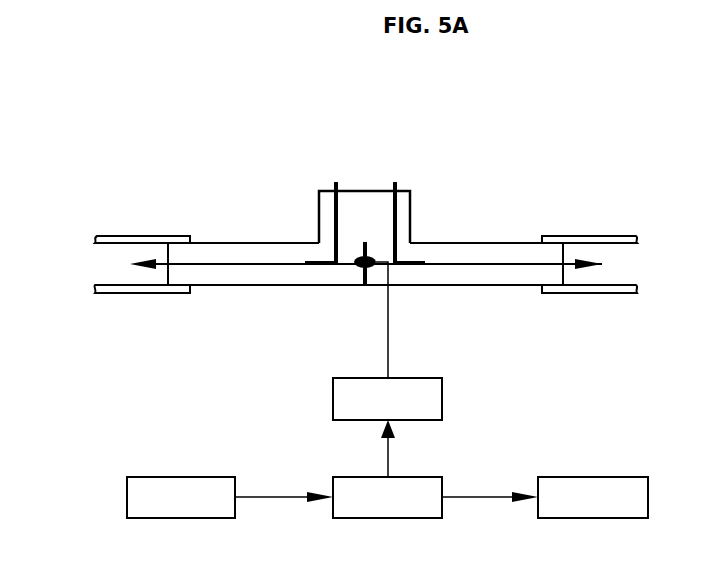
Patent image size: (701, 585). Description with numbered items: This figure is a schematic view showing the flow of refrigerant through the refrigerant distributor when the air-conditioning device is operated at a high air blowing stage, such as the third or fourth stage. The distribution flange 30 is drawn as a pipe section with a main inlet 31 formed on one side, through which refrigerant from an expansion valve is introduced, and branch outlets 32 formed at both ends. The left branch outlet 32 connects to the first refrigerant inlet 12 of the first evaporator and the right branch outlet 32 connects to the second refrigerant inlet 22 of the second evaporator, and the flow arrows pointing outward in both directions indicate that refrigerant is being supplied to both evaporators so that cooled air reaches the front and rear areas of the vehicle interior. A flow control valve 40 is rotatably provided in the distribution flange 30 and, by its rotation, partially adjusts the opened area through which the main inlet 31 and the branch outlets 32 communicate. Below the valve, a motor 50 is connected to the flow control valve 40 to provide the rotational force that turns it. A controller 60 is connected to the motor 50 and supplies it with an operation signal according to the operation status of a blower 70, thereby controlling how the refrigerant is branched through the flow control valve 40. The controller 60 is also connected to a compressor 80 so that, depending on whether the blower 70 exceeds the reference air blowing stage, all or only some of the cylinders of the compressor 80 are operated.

The first refrigerant inlet 12 is at (140, 235).
The second refrigerant inlet 22 is at (590, 235).
The distribution flange 30 is at (374, 238).
The main inlet 31 is at (333, 182).
The branch outlets 32 is at (248, 242).
The flow control valve 40 is at (362, 278).
The motor 50 is at (442, 397).
The controller 60 is at (388, 518).
The blower 70 is at (182, 520).
The compressor 80 is at (595, 518).